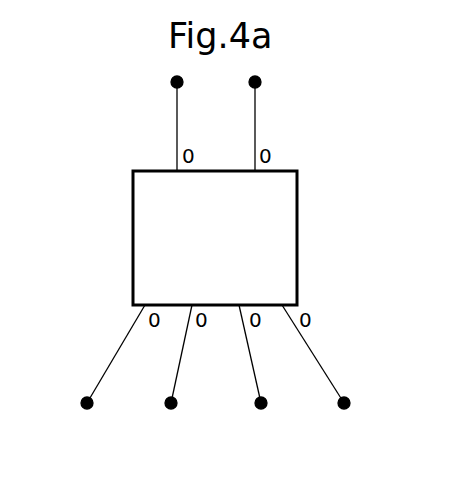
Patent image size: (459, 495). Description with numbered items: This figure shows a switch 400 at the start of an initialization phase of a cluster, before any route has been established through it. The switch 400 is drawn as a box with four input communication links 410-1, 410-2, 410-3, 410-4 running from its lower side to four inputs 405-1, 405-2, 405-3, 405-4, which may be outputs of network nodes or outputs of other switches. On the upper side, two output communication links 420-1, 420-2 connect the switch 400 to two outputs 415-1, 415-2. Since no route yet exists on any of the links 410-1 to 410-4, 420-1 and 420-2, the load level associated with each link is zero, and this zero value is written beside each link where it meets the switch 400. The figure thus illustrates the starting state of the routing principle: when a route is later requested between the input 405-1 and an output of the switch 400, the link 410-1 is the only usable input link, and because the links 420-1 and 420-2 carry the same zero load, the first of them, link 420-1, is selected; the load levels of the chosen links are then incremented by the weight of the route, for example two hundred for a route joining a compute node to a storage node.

The switch 400 is at (237, 252).
The input 405-1 is at (86, 400).
The input 405-2 is at (166, 402).
The input 405-3 is at (257, 402).
The input 405-4 is at (344, 409).
The input communication link 410-1 is at (118, 350).
The input communication link 410-2 is at (179, 365).
The input communication link 410-3 is at (256, 378).
The input communication link 410-4 is at (316, 355).
The output 415-1 is at (172, 78).
The output 415-2 is at (260, 78).
The output communication link 420-1 is at (176, 112).
The output communication link 420-2 is at (256, 112).